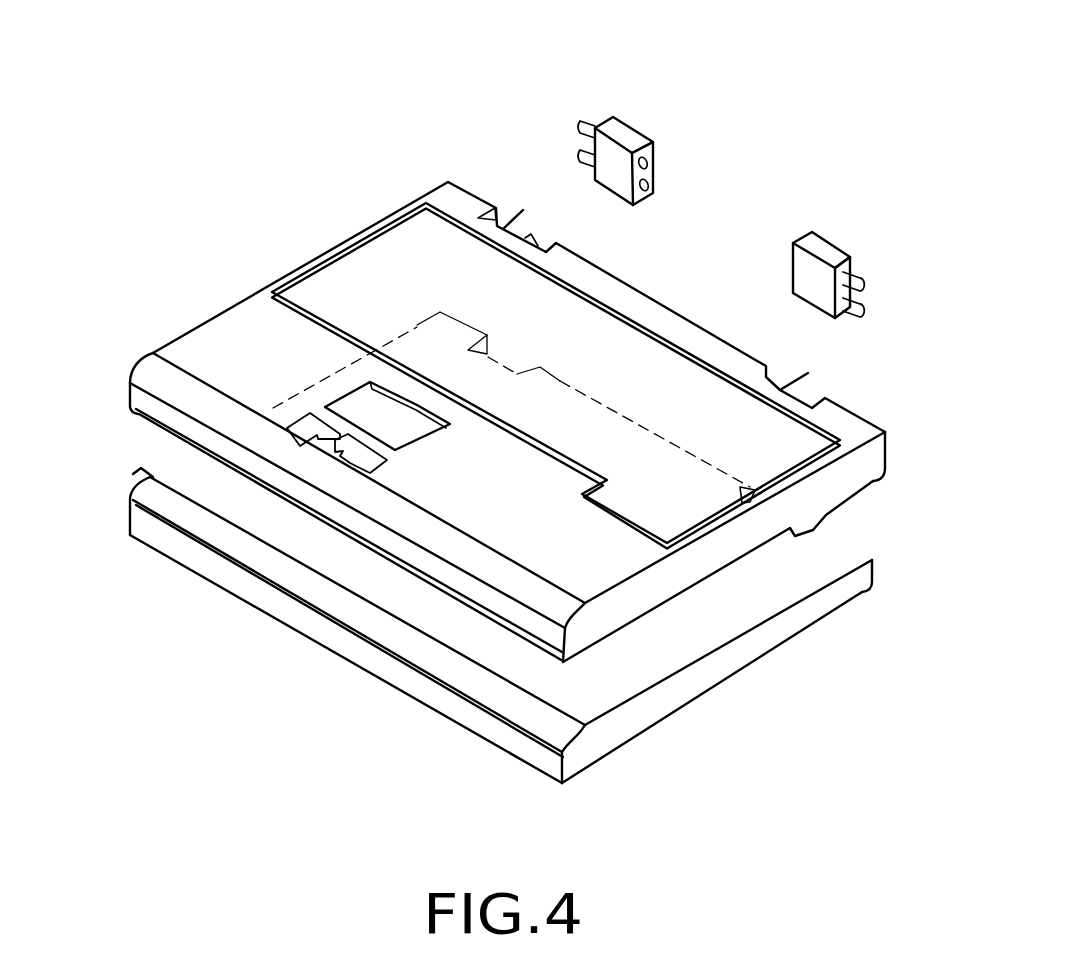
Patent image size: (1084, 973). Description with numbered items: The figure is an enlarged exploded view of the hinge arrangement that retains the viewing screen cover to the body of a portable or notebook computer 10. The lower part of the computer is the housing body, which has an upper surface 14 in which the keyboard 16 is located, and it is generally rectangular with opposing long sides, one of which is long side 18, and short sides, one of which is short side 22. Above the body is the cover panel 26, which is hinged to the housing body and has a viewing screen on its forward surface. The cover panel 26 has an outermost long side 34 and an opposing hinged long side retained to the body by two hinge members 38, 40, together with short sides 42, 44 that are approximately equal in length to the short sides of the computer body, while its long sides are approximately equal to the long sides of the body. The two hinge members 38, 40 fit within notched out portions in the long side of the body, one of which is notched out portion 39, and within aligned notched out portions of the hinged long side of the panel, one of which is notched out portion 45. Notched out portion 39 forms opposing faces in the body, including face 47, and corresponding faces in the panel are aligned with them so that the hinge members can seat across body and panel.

The portable computer 10 is at (692, 232).
The upper surface 14 is at (232, 333).
The keyboard 16 is at (413, 232).
The long side 18 is at (147, 418).
The short side 22 is at (587, 637).
The cover panel 26 is at (667, 724).
The outermost long side 34 is at (212, 568).
The hinge member 38 is at (850, 232).
The notched out portion 39 is at (523, 210).
The hinge member 40 is at (647, 117).
The short side 42 is at (135, 472).
The short side 44 is at (753, 645).
The notched out portion 45 is at (500, 365).
The face 47 is at (752, 500).